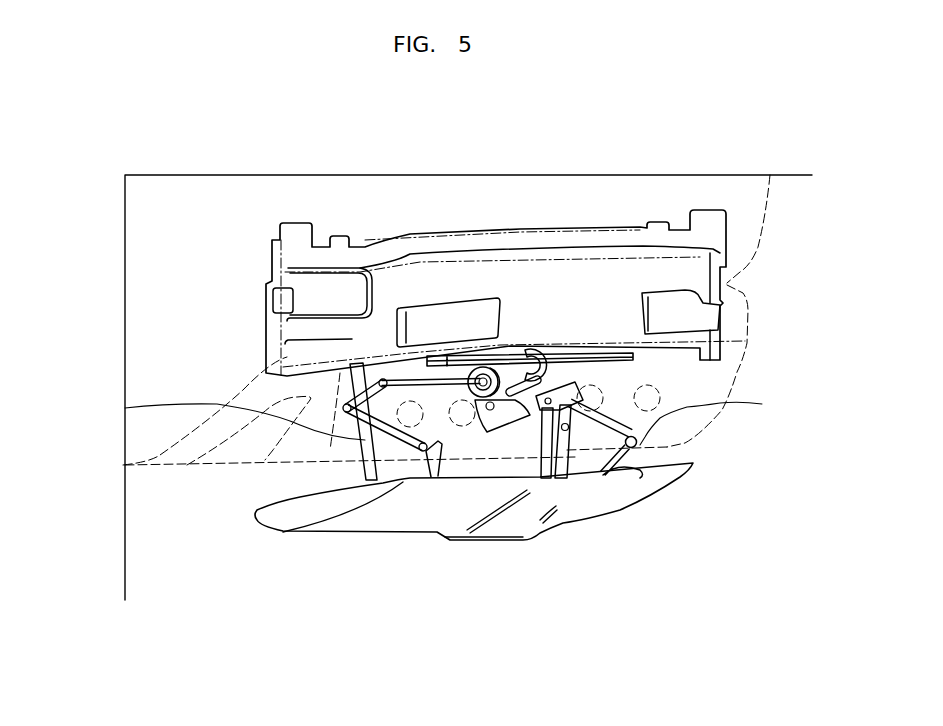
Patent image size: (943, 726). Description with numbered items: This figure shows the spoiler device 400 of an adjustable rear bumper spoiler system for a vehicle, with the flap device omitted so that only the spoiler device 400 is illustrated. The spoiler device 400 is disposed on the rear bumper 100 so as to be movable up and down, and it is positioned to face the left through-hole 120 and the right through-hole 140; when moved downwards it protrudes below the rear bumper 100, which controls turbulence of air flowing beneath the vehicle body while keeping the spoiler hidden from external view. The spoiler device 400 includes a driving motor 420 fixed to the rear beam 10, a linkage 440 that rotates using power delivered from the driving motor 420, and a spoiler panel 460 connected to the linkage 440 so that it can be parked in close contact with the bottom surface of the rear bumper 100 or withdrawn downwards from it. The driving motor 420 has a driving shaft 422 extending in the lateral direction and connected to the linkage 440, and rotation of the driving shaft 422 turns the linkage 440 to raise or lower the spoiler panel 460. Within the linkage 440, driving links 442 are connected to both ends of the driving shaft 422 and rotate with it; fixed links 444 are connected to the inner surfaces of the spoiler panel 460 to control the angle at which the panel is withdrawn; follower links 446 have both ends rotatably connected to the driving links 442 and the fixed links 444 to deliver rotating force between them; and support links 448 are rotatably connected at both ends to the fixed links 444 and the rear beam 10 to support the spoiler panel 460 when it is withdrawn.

The rear beam 10 is at (520, 236).
The rear bumper 100 is at (317, 203).
The left through-hole 120 is at (125, 408).
The right through-hole 140 is at (762, 404).
The spoiler device 400 is at (563, 363).
The driving motor 420 is at (477, 403).
The driving shaft 422 is at (397, 378).
The linkage 440 is at (360, 472).
The driving links 442 is at (640, 445).
The fixed links 444 is at (637, 452).
The follower links 446 is at (547, 507).
The support links 448 is at (600, 410).
The spoiler panel 460 is at (497, 538).